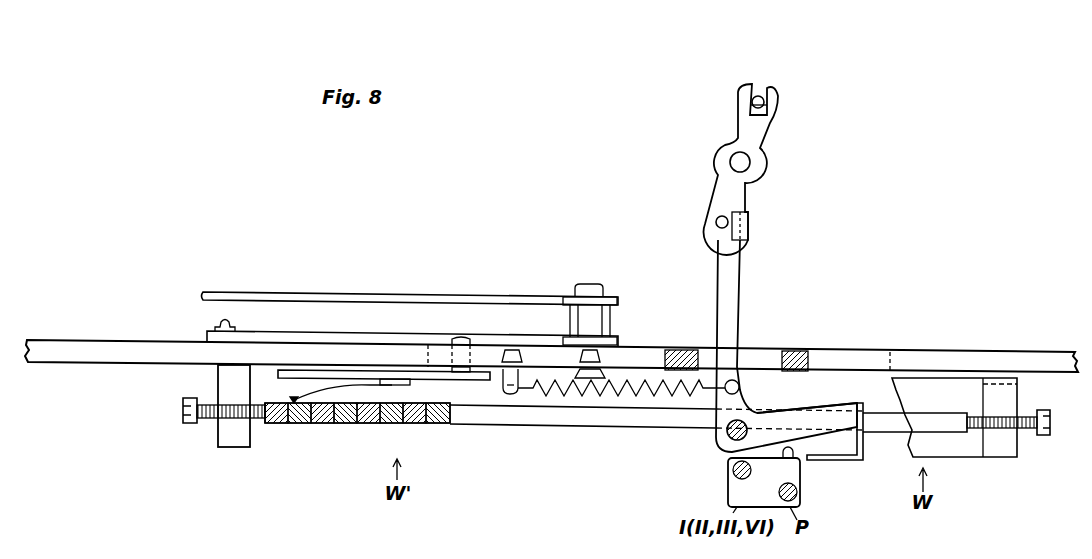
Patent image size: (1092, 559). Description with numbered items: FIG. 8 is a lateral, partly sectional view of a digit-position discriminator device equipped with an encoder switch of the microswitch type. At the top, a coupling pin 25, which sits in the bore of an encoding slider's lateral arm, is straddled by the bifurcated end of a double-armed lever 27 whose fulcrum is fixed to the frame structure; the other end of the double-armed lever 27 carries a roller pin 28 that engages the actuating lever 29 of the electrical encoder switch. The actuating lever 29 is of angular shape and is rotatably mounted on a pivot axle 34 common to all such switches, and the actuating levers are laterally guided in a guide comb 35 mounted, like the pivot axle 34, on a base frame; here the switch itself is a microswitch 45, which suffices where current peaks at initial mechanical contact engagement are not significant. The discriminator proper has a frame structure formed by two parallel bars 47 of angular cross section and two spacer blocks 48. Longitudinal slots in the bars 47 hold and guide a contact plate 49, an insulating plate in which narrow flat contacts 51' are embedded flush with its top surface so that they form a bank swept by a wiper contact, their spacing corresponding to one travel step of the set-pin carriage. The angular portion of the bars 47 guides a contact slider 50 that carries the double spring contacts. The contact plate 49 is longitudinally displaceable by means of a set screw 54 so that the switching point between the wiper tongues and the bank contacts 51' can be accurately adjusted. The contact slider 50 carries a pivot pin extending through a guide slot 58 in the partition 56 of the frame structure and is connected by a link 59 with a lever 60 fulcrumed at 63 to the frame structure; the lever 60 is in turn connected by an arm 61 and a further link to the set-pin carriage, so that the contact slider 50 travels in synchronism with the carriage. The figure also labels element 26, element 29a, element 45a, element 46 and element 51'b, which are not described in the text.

The coupling pin 25 is at (757, 100).
The pin 26 is at (763, 90).
The double-armed lever 27 is at (757, 133).
The roller pin 28 is at (720, 220).
The actuating lever 29 is at (732, 293).
The arm of rod 29a is at (813, 432).
The pivot axle 34 is at (728, 435).
The guide comb 35 is at (863, 447).
The microswitch 45 is at (737, 488).
The switch button 45a is at (790, 450).
The spring 46 is at (620, 390).
The parallel bars 47 is at (975, 398).
The spacer blocks 48 is at (220, 440).
The contact plate 49 is at (275, 422).
The contact slider 50 is at (480, 380).
The flat contacts 51' is at (564, 449).
The curved lever 51'b is at (341, 423).
The set screw 54 is at (182, 422).
The partition 56 is at (105, 348).
The guide slot 58 is at (442, 350).
The link 59 is at (312, 340).
The lever 60 is at (505, 337).
The arm 61 is at (448, 300).
The fulcrum 63 is at (590, 284).